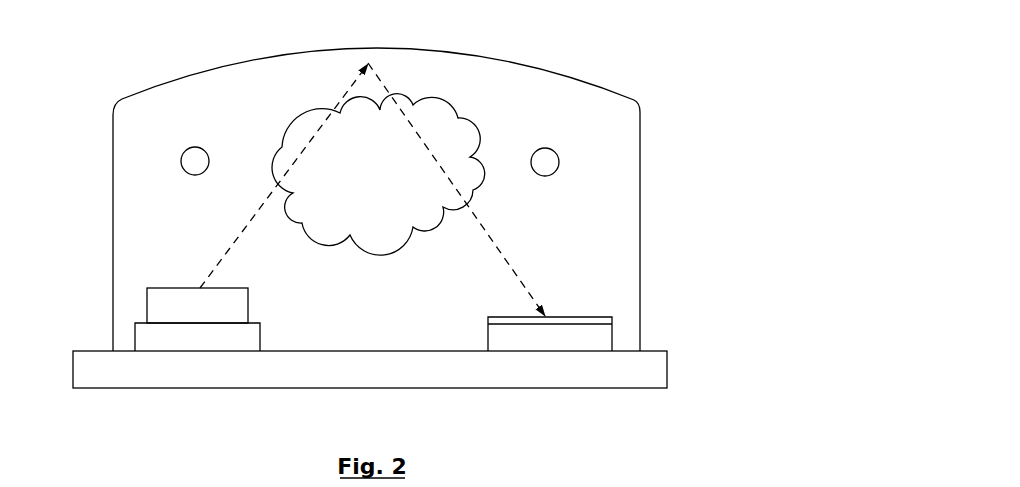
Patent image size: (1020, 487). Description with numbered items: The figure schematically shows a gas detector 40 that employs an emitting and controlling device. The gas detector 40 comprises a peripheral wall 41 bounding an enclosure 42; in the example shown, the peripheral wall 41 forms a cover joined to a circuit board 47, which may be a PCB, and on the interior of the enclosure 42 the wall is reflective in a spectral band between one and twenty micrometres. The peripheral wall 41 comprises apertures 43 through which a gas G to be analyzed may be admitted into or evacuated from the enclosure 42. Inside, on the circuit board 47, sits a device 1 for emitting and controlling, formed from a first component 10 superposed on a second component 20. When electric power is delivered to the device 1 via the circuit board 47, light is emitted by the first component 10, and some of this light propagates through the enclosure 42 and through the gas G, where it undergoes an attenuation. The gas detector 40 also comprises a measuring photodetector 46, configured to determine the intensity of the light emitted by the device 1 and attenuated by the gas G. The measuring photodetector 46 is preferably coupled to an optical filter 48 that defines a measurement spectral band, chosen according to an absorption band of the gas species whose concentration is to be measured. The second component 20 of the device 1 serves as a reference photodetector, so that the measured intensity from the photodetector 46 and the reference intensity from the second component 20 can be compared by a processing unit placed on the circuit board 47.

The gas detector 40 is at (88, 63).
The peripheral wall 41 is at (625, 89).
The enclosure 42 is at (624, 128).
The apertures 43 is at (199, 165).
The device for emitting and controlling 1 is at (156, 295).
The first component 10 is at (235, 296).
The second component 20 is at (247, 333).
The measuring photodetector 46 is at (593, 334).
The circuit board 47 is at (643, 360).
The optical filter 48 is at (608, 320).
The gas G is at (434, 110).